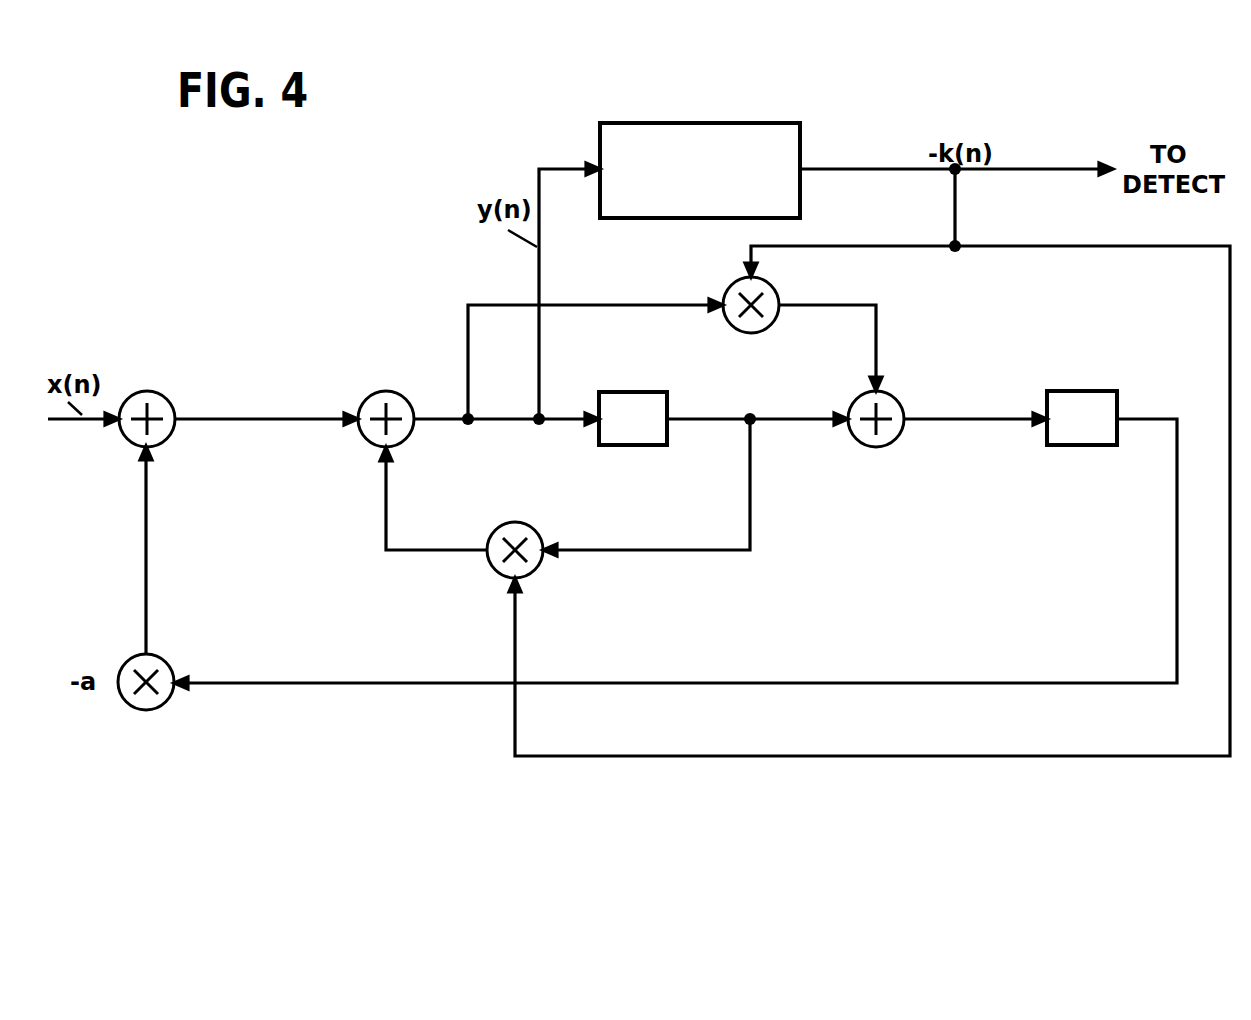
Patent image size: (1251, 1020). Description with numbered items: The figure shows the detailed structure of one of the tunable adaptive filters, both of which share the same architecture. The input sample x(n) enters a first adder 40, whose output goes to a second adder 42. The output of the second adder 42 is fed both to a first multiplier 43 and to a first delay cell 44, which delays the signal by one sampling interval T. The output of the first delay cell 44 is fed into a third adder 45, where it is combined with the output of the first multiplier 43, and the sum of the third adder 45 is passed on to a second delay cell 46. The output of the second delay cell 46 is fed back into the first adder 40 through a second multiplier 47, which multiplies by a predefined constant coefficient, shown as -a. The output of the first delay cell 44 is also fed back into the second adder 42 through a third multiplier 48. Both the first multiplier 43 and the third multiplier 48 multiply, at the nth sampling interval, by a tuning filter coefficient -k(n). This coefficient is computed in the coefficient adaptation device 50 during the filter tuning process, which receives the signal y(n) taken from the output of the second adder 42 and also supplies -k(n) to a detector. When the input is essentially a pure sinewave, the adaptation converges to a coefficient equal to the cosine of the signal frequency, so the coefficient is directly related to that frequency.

The first adder 40 is at (173, 405).
The second adder 42 is at (412, 407).
The first multiplier 43 is at (777, 294).
The first delay cell 44 is at (643, 390).
The third adder 45 is at (903, 407).
The second delay cell 46 is at (1090, 390).
The second multiplier 47 is at (170, 665).
The third multiplier 48 is at (542, 537).
The coefficient adaptation device 50 is at (772, 120).